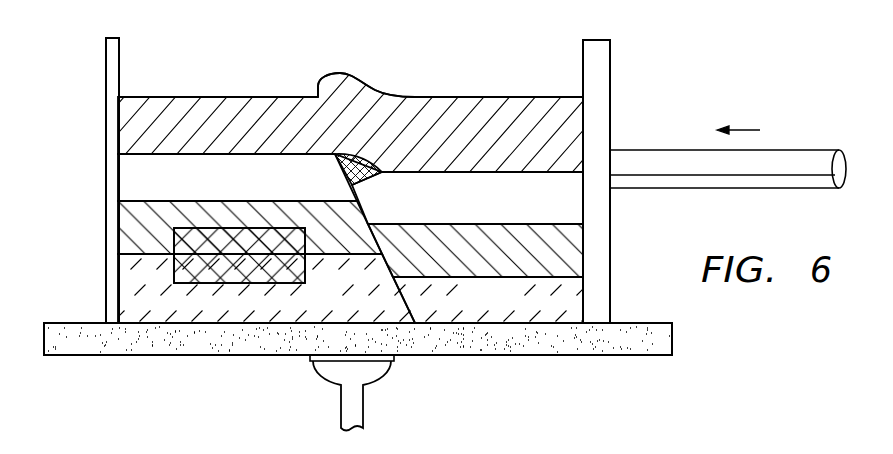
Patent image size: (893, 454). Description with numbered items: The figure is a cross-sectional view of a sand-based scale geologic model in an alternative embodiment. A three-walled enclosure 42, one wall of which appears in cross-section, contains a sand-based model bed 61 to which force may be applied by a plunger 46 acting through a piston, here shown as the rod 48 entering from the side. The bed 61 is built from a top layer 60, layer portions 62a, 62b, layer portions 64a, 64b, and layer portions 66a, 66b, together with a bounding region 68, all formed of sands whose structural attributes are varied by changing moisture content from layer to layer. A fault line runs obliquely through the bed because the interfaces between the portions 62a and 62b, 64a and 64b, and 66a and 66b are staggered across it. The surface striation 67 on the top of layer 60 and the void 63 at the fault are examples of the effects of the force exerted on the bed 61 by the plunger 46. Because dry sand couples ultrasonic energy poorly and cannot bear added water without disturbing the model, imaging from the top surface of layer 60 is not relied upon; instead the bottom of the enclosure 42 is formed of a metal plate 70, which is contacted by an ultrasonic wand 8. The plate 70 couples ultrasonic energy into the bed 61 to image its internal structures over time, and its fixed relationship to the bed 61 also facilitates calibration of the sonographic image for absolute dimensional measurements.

The ultrasonic wand 8 is at (358, 403).
The three-walled enclosure 42 is at (105, 68).
The plunger 46 is at (613, 70).
The plunger rod 48 is at (803, 149).
The layer 60 is at (348, 100).
The model bed 61 is at (348, 164).
The layer portion 62a is at (247, 190).
The layer portion 62b is at (516, 209).
The void 63 is at (362, 177).
The layer portion 64a is at (353, 242).
The layer portion 64b is at (516, 264).
The layer portion 66a is at (352, 303).
The layer portion 66b is at (516, 315).
The surface striation 67 is at (342, 72).
The bounding region 68 is at (252, 268).
The metal plate 70 is at (672, 340).